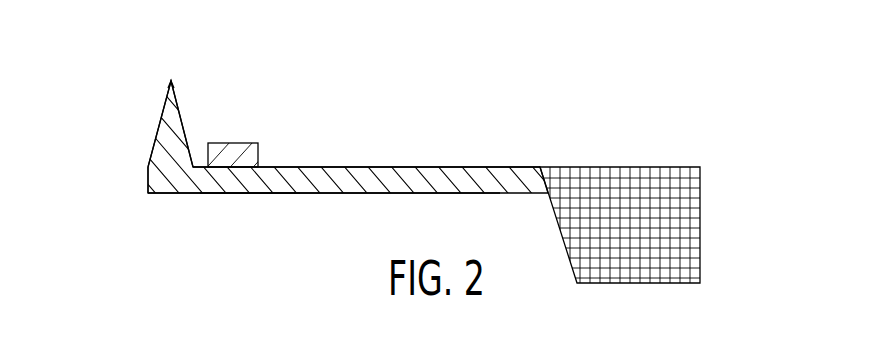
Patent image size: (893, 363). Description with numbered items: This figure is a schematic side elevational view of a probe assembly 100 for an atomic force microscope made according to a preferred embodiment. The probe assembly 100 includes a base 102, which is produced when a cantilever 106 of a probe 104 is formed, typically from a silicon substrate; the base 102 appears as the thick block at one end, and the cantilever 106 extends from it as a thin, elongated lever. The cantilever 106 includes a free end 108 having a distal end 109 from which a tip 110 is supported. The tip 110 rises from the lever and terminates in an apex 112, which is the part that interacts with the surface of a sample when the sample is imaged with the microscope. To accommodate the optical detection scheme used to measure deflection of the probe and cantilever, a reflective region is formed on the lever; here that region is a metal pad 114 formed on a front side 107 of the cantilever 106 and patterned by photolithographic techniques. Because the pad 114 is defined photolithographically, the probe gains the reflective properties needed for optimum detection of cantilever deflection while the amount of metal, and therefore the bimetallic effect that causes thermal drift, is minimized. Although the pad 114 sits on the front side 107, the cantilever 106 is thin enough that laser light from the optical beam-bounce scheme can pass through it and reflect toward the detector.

The probe assembly 100 is at (655, 100).
The base 102 is at (675, 300).
The probe 104 is at (428, 140).
The cantilever 106 is at (313, 183).
The front side 107 is at (347, 167).
The free end 108 is at (193, 209).
The distal end 109 is at (155, 183).
The tip 110 is at (180, 110).
The apex 112 is at (176, 69).
The metal pad 114 is at (242, 150).